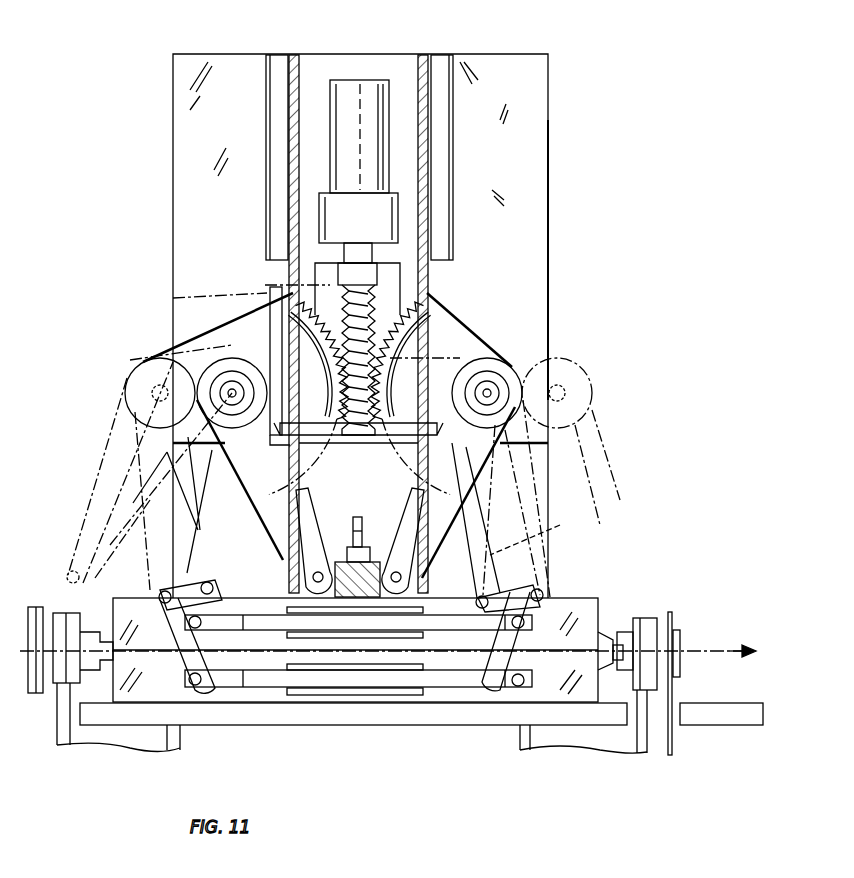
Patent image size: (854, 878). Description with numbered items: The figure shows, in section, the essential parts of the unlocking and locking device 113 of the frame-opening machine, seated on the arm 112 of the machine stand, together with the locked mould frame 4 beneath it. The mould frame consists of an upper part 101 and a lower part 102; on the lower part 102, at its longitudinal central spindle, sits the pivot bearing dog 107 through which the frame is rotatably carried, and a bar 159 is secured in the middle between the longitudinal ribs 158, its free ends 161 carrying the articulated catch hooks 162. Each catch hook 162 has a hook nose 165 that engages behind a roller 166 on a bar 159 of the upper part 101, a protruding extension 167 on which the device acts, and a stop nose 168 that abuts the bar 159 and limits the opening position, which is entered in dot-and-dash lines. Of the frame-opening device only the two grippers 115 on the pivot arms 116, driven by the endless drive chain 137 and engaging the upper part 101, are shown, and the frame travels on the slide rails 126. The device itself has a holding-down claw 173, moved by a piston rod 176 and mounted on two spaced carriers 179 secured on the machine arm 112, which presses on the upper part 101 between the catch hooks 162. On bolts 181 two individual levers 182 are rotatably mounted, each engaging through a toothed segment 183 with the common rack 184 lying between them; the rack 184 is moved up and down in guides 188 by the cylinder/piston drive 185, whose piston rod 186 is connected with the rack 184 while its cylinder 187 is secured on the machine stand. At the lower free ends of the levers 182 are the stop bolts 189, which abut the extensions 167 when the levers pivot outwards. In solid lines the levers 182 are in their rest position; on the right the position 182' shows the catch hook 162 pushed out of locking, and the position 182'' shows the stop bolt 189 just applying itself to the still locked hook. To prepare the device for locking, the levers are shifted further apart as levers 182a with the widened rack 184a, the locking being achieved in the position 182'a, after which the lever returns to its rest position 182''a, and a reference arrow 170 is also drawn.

The mould frame 4 is at (385, 700).
The upper part 101 is at (598, 625).
The lower part 102 is at (595, 698).
The pivot bearing dog 107 is at (620, 640).
The arm 112 is at (503, 58).
The unlocking and locking device 113 is at (552, 264).
The grippers 115 is at (645, 625).
The pivot arms 116 is at (668, 758).
The rails 126 is at (430, 712).
The endless drive chain 137 is at (675, 702).
The longitudinal ribs 158 is at (335, 668).
The bar 159 is at (272, 632).
The free ends 161 is at (207, 692).
The catch hooks 162 is at (160, 640).
The hook nose 165 is at (172, 592).
The roller 166 is at (201, 622).
The protruding extension 167 is at (213, 586).
The stop nose 168 is at (190, 700).
The direction of movement 170 is at (728, 648).
The claw 173 is at (376, 560).
The piston rod 176 is at (360, 520).
The carriers 179 is at (299, 215).
The bolts 181 is at (492, 389).
The levers 182 is at (316, 517).
The lever position 182' is at (546, 498).
The lever position 182'' is at (542, 533).
The levers 182a is at (600, 405).
The lever position 182'a is at (138, 472).
The lever rest position 182''a is at (138, 467).
The toothed segment 183 is at (470, 340).
The rack 184 is at (402, 298).
The widened rack 184a is at (239, 391).
The cylinder/piston drive 185 is at (396, 161).
The piston rod 186 is at (352, 262).
The cylinder 187 is at (352, 120).
The guides 188 is at (430, 296).
The bolts 189 is at (322, 568).